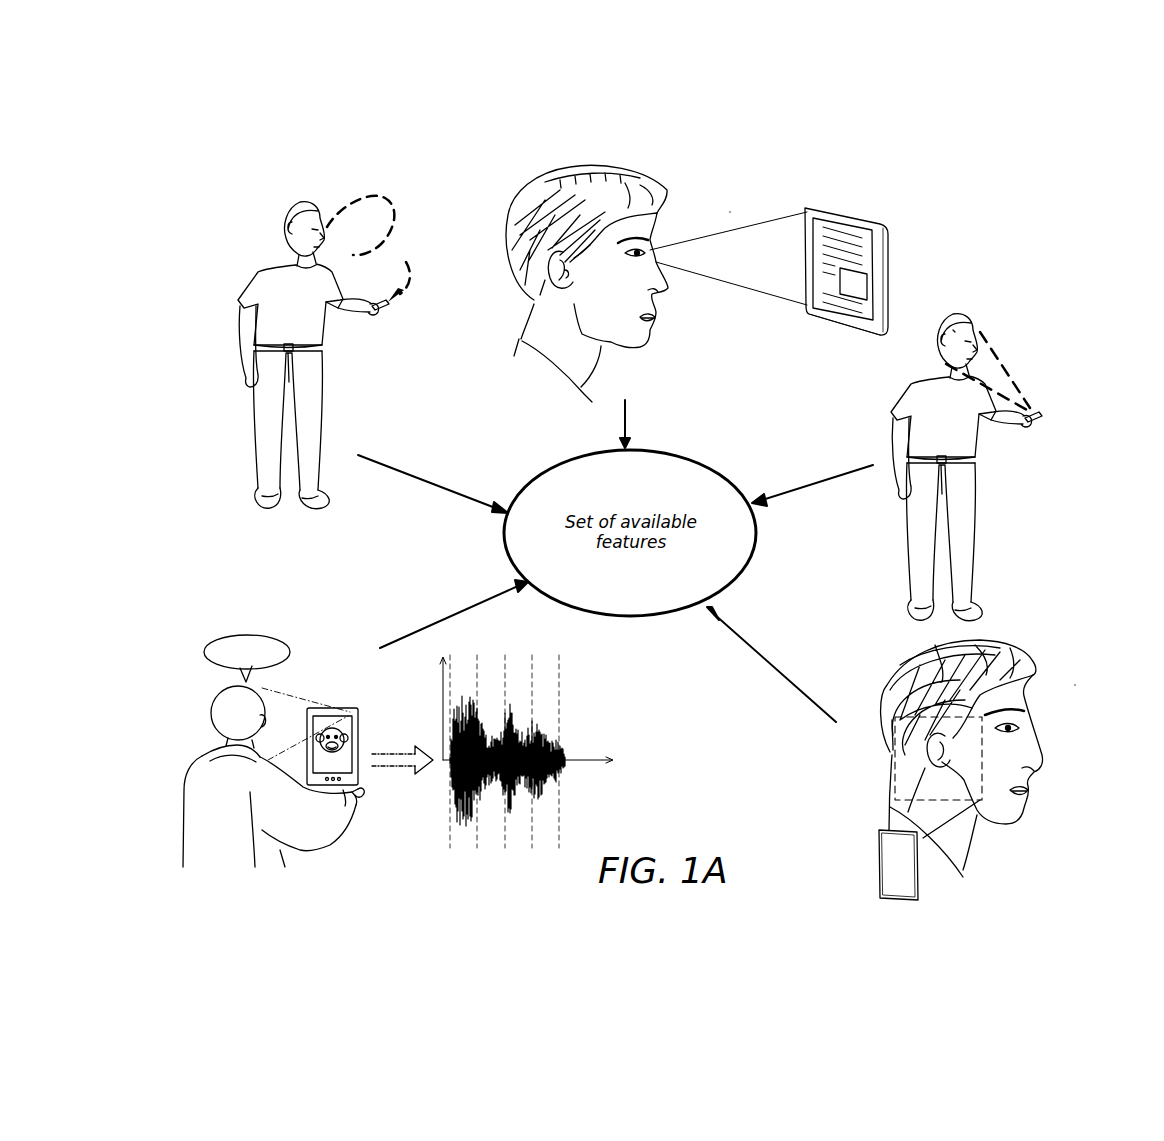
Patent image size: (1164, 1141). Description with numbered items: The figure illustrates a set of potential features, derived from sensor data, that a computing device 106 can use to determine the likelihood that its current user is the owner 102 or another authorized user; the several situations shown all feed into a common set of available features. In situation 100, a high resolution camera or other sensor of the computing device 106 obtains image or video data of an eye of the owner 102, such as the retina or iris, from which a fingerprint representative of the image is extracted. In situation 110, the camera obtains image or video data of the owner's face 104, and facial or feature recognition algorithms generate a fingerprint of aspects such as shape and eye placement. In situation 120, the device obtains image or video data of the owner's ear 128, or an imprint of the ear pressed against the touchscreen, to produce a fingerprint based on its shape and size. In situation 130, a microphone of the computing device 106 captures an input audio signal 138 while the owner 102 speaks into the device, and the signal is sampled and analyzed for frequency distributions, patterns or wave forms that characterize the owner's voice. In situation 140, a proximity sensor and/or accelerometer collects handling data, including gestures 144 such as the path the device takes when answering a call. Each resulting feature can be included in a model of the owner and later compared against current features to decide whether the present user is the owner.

The situation 100 is at (730, 212).
The owner 102 is at (283, 318).
The owner's face 104 is at (953, 330).
The computing device 106 is at (387, 308).
The situation 110 is at (1018, 302).
The situation 120 is at (1075, 685).
The owner's ear 128 is at (892, 720).
The situation 130 is at (332, 660).
The input audio signal 138 is at (562, 774).
The situation 140 is at (351, 192).
The gestures 144 is at (402, 258).